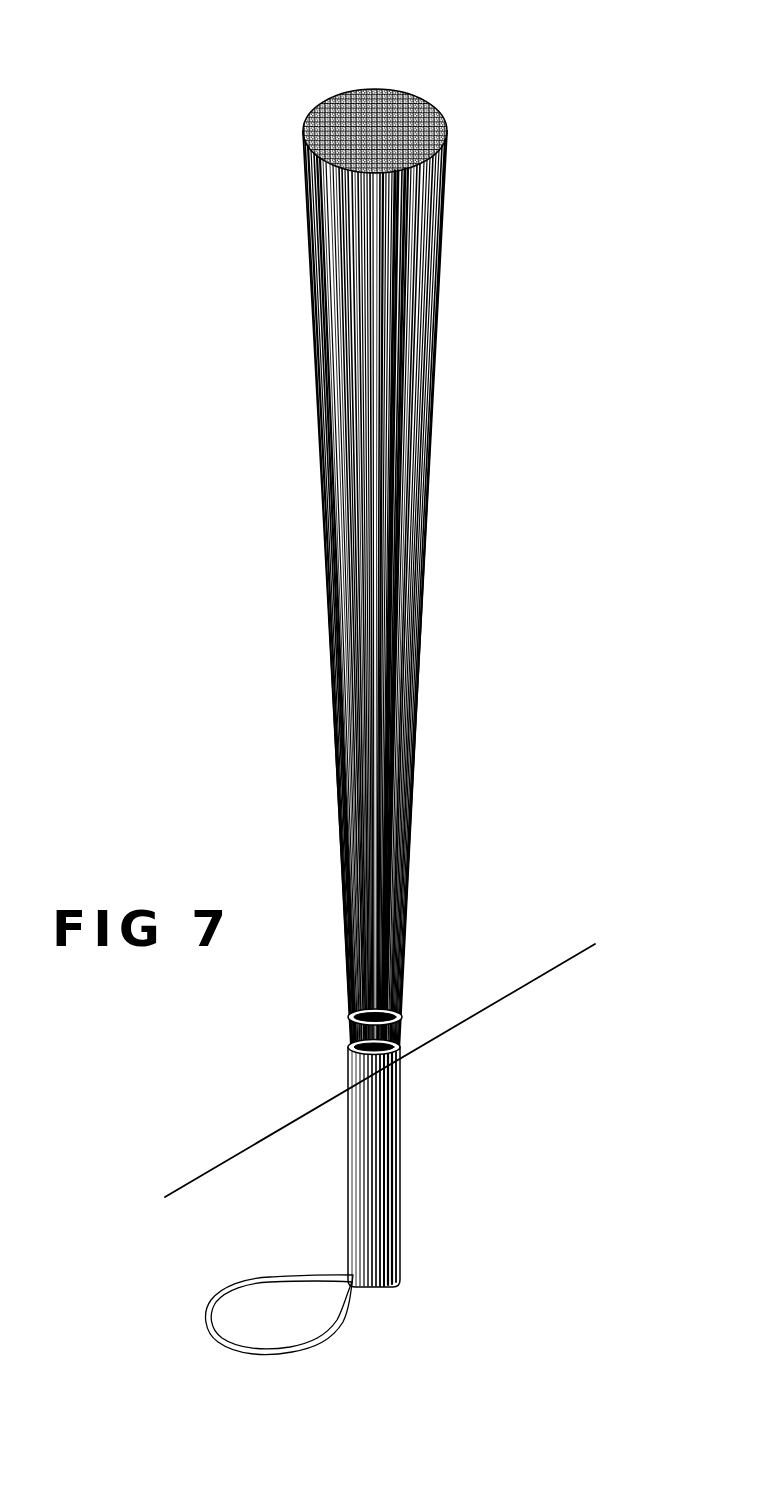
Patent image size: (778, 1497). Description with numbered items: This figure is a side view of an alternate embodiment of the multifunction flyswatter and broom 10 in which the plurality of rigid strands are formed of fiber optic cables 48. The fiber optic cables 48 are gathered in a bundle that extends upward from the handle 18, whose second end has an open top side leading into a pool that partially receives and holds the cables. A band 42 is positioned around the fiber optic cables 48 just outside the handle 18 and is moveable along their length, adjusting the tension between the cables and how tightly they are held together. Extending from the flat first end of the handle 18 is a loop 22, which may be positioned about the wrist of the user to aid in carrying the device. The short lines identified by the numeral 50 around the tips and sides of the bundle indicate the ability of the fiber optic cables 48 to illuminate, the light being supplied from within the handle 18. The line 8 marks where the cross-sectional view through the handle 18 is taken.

The multifunction flyswatter and broom 10 is at (290, 567).
The illumination lines 50 is at (257, 50).
The fiber optic cables 48 is at (379, 529).
The band 42 is at (396, 1010).
The handle 18 is at (400, 1164).
The loop 22 is at (330, 1339).
The section line 8— 8 is at (238, 1158).